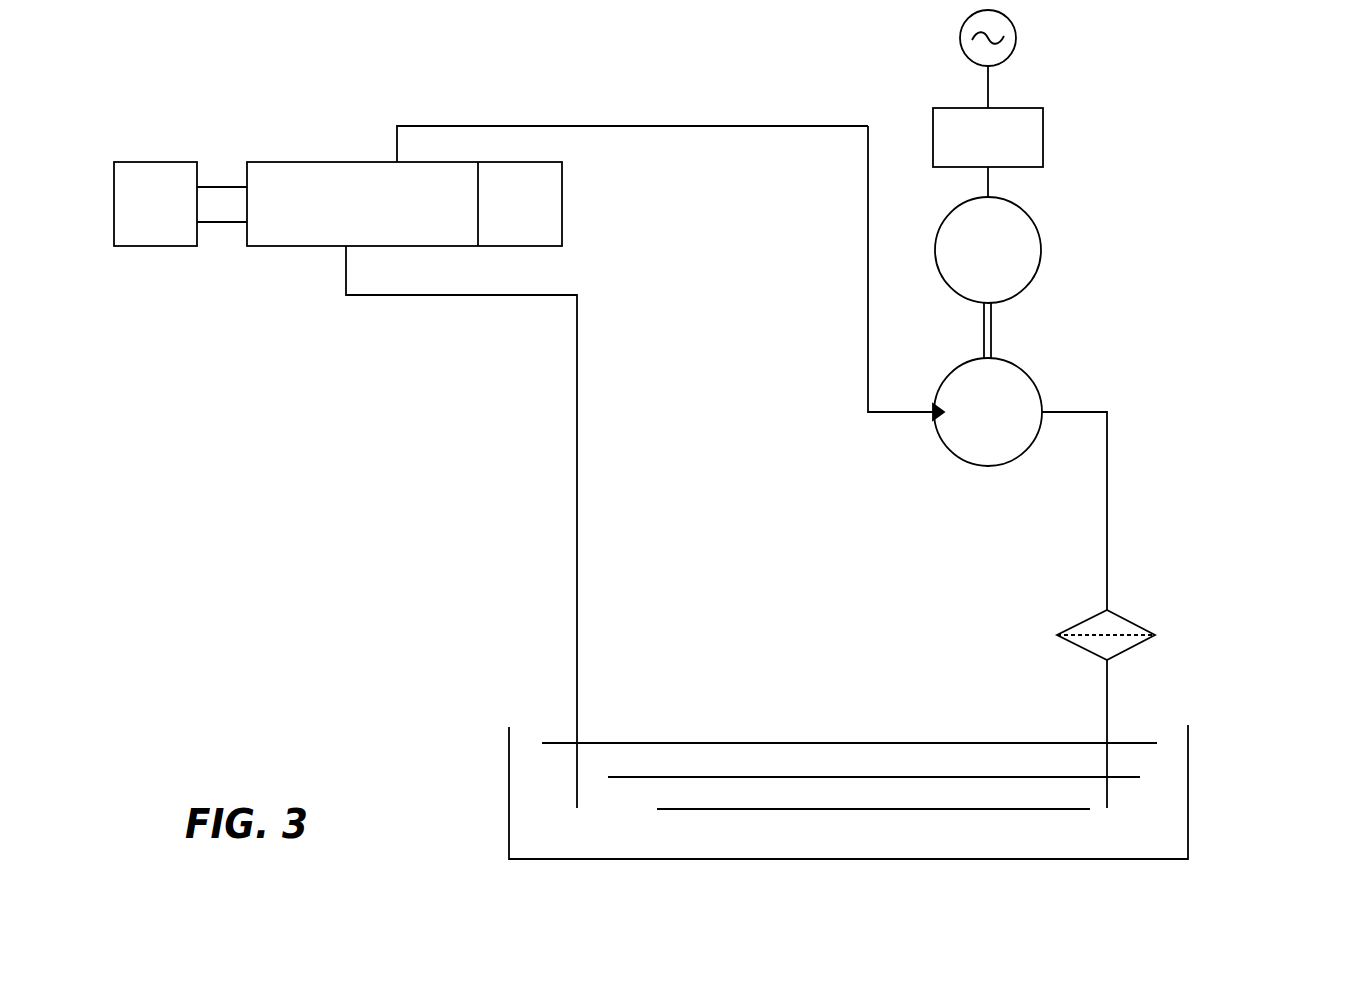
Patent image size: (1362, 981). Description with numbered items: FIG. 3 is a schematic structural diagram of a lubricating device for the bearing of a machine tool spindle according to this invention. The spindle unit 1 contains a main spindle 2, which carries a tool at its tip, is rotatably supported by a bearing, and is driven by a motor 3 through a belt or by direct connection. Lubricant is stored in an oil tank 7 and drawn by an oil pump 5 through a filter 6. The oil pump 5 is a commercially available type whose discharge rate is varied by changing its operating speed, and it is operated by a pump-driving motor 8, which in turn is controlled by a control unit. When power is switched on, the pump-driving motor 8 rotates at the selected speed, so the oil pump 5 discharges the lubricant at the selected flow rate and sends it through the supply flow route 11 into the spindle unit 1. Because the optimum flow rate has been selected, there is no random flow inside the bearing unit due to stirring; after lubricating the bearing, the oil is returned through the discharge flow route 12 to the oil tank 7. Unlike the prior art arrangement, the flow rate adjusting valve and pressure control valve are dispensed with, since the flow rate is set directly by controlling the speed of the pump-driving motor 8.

The spindle unit 1 is at (273, 160).
The main spindle 2 is at (221, 210).
The motor 3 is at (520, 160).
The oil pump 5 is at (1037, 383).
The filter 6 is at (1128, 618).
The oil tank 7 is at (1180, 783).
The pump-driving motor 8 is at (1040, 229).
The supply flow route 11 is at (760, 125).
The discharge flow route 12 is at (518, 295).